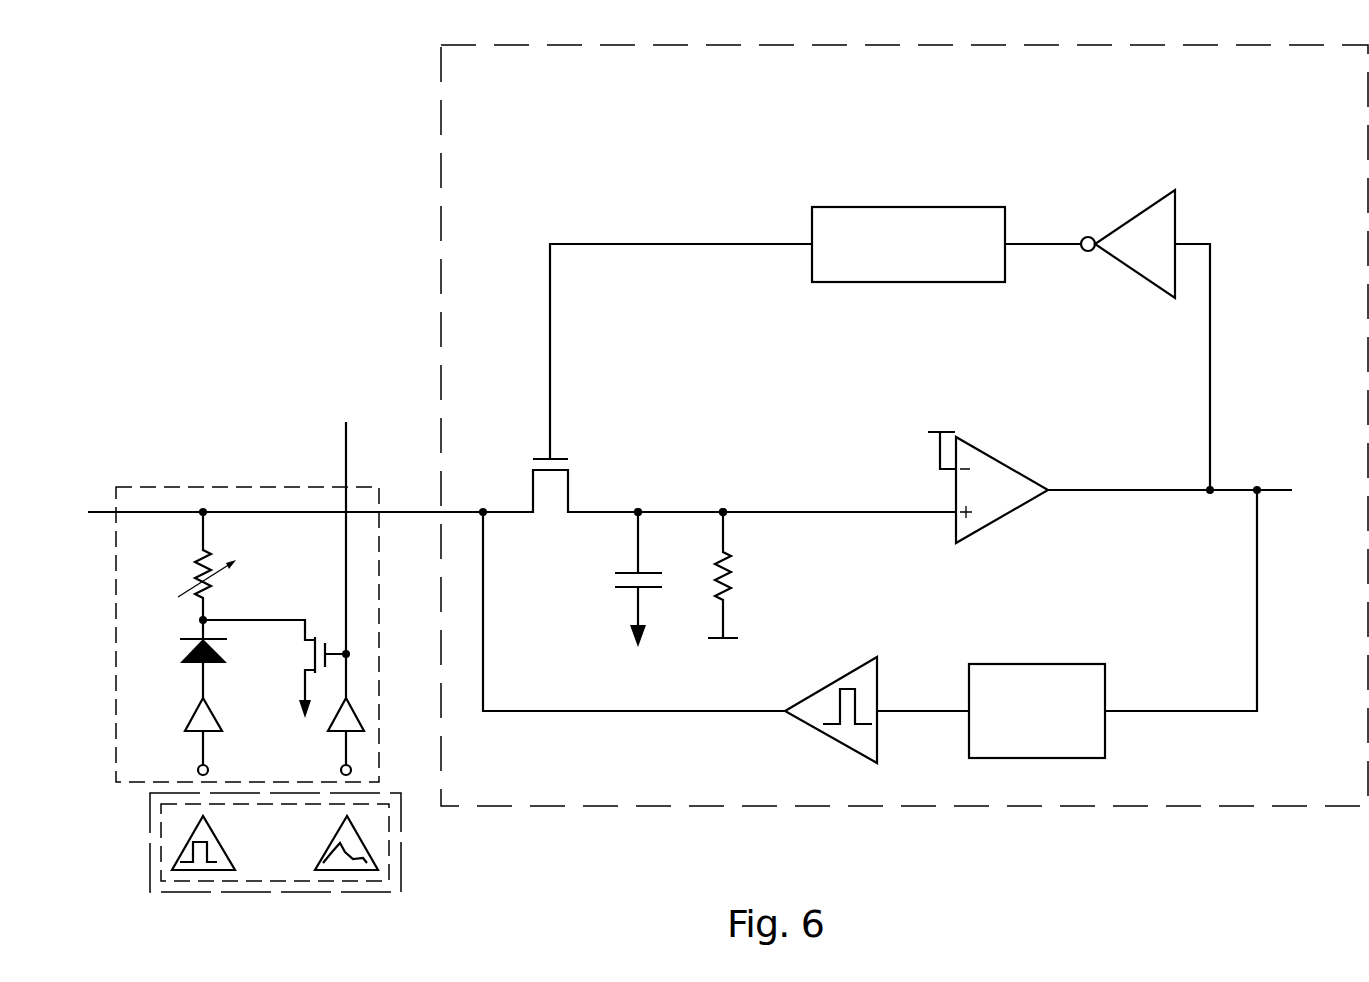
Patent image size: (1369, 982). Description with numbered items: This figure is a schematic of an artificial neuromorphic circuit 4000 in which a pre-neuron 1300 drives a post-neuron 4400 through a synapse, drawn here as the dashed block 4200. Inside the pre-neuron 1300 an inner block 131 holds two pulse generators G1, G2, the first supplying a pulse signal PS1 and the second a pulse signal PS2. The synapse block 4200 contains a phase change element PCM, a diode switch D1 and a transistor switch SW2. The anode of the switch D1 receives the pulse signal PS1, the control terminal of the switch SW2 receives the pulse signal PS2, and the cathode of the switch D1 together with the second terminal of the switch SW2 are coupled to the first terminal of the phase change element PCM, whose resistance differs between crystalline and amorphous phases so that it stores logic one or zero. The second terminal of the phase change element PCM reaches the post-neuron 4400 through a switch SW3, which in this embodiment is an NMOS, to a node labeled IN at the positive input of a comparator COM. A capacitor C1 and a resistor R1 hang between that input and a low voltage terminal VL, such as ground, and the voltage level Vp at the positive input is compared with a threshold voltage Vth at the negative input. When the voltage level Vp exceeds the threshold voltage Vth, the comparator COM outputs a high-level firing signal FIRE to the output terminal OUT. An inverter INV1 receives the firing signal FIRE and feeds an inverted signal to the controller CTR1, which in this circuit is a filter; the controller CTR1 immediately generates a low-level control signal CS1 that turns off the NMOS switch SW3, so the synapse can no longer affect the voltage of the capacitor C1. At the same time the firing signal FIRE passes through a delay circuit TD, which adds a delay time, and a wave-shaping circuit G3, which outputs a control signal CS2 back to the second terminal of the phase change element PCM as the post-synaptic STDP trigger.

The artificial neuromorphic circuit 4000 is at (178, 80).
The post-neuron 4400 is at (441, 68).
The pixel circuit 4200 is at (237, 487).
The pre-neuron 1300 is at (150, 799).
The pulse generator unit 131 is at (160, 812).
The pulse generator G1 is at (193, 830).
The pulse generator G2 is at (356, 832).
The pulse signal PS1 is at (183, 853).
The pulse signal PS2 is at (368, 853).
The phase change element PCM is at (182, 566).
The switch D1 is at (183, 659).
The switch SW2 is at (276, 669).
The switch SW3 is at (666, 397).
The voltage level Vp is at (639, 494).
The input node IN is at (723, 508).
The capacitor C1 is at (621, 579).
The resistor R1 is at (707, 575).
The voltage terminal VL is at (725, 671).
The threshold voltage Vth is at (938, 433).
The comparator COM is at (1003, 464).
The firing signal FIRE is at (1112, 477).
The output terminal OUT is at (1257, 490).
The inverter INV1 is at (1124, 222).
The controller CTR1 is at (908, 207).
The control signal CS1 is at (806, 234).
The delay circuit TD is at (1033, 664).
The wave-shaping circuit G3 is at (830, 685).
The control signal CS2 is at (742, 732).